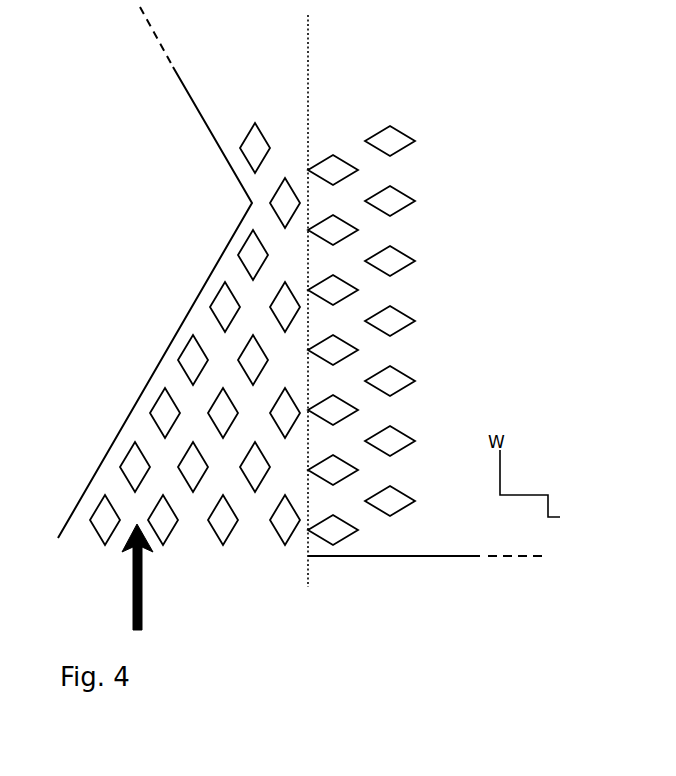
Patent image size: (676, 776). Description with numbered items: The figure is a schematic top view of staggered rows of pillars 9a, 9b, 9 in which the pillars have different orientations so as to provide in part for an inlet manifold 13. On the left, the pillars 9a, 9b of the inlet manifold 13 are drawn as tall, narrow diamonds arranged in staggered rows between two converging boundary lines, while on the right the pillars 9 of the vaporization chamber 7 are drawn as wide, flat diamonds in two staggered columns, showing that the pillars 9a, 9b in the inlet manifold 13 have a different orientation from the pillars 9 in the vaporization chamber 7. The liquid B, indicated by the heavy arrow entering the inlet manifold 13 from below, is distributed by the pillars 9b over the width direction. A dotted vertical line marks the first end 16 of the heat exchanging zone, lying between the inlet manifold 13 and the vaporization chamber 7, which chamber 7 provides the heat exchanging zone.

The vaporization chamber 7 is at (364, 542).
The pillars 9 is at (390, 143).
The pillars 9a is at (218, 298).
The pillars 9b is at (248, 124).
The inlet manifold 13 is at (194, 361).
The first end of heat exchanging zone 16 is at (308, 568).
The liquid B is at (133, 596).